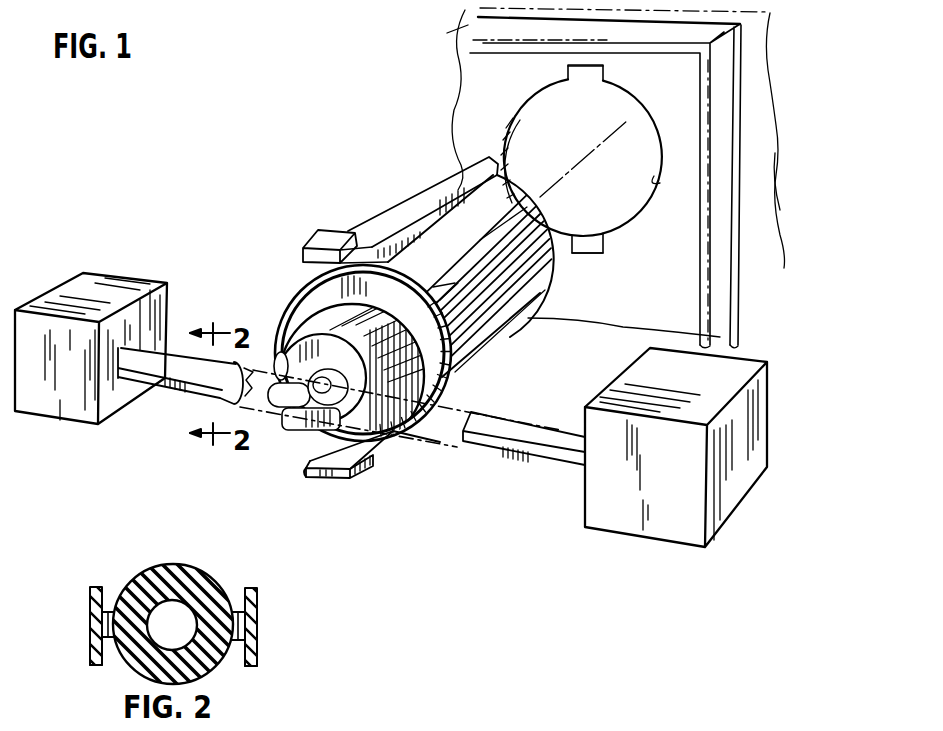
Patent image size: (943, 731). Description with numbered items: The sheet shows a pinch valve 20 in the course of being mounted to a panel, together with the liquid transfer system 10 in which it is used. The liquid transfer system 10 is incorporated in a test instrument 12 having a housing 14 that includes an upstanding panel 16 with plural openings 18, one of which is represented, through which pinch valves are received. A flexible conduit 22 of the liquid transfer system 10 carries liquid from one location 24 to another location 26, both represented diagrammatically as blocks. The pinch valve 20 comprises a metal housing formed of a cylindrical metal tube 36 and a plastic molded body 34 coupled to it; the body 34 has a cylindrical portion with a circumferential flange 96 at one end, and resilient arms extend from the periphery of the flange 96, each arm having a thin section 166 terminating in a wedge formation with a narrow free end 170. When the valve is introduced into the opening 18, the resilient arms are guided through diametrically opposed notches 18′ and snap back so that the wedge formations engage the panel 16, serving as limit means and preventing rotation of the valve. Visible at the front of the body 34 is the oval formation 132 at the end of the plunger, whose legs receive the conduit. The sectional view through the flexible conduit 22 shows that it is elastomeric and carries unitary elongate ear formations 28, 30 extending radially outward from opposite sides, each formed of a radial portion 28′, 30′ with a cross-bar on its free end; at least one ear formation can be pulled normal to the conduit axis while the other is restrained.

In FIG. 1, the liquid transfer system 10 is at (445, 236).
In FIG. 1, the test instrument 12 is at (752, 312).
In FIG. 1, the housing 14 is at (777, 153).
In FIG. 1, the upstanding panel 16 is at (473, 58).
In FIG. 1, the opening 18 is at (654, 176).
In FIG. 1, the notch 18′ is at (566, 67).
In FIG. 1, the pinch valve 20 is at (500, 346).
In FIG. 1, the flexible conduit 22 is at (533, 463).
In FIG. 2, the flexible conduit 22 is at (202, 557).
In FIG. 1, the location 24 is at (140, 265).
In FIG. 1, the location 26 is at (642, 537).
In FIG. 1, the plastic molded body 34 is at (378, 198).
In FIG. 1, the cylindrical metal tube 36 is at (476, 275).
In FIG. 1, the circumferential flange 96 is at (447, 393).
In FIG. 1, the formation 132 is at (328, 318).
In FIG. 1, the thin section 166 is at (375, 462).
In FIG. 1, the narrow free end 170 is at (336, 478).
In FIG. 2, the ear formation 28 is at (88, 602).
In FIG. 2, the radial portion 28′ is at (111, 647).
In FIG. 2, the ear formation 30 is at (262, 664).
In FIG. 2, the radial portion 30′ is at (233, 640).